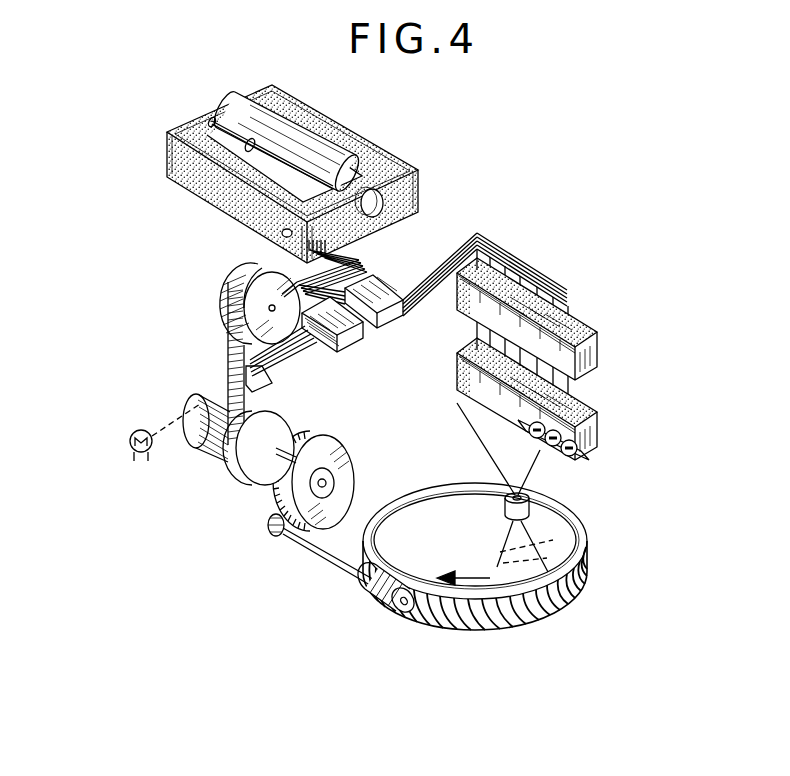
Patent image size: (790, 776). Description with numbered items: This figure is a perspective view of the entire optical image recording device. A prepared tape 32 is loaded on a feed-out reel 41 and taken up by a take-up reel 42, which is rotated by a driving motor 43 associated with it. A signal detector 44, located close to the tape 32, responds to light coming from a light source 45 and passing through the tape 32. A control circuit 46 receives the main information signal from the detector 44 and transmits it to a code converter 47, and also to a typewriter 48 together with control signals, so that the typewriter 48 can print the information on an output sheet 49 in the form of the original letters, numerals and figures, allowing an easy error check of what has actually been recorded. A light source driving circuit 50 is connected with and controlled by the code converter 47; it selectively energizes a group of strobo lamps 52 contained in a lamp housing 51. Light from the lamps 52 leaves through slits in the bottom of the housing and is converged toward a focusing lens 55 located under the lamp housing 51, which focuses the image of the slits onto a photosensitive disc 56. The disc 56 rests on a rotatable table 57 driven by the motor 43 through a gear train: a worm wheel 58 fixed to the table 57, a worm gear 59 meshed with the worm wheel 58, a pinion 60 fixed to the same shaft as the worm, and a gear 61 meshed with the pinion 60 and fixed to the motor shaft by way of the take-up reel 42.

The tape 32 is at (227, 346).
The feed-out reel 41 is at (240, 283).
The take-up reel 42 is at (246, 470).
The driving motor 43 is at (200, 436).
The signal detector 44 is at (257, 378).
The light source 45 is at (131, 446).
The control circuit 46 is at (355, 338).
The code converter 47 is at (383, 288).
The typewriter 48 is at (200, 130).
The output sheet 49 is at (302, 128).
The light source driving circuit 50 is at (584, 318).
The lamp housing 51 is at (583, 412).
The strobo lamps 52 is at (573, 457).
The focusing lens 55 is at (504, 512).
The photosensitive disc 56 is at (441, 508).
The rotatable table 57 is at (366, 549).
The worm wheel 58 is at (495, 628).
The worm gear 59 is at (372, 596).
The pinion 60 is at (278, 538).
The gear 61 is at (343, 461).